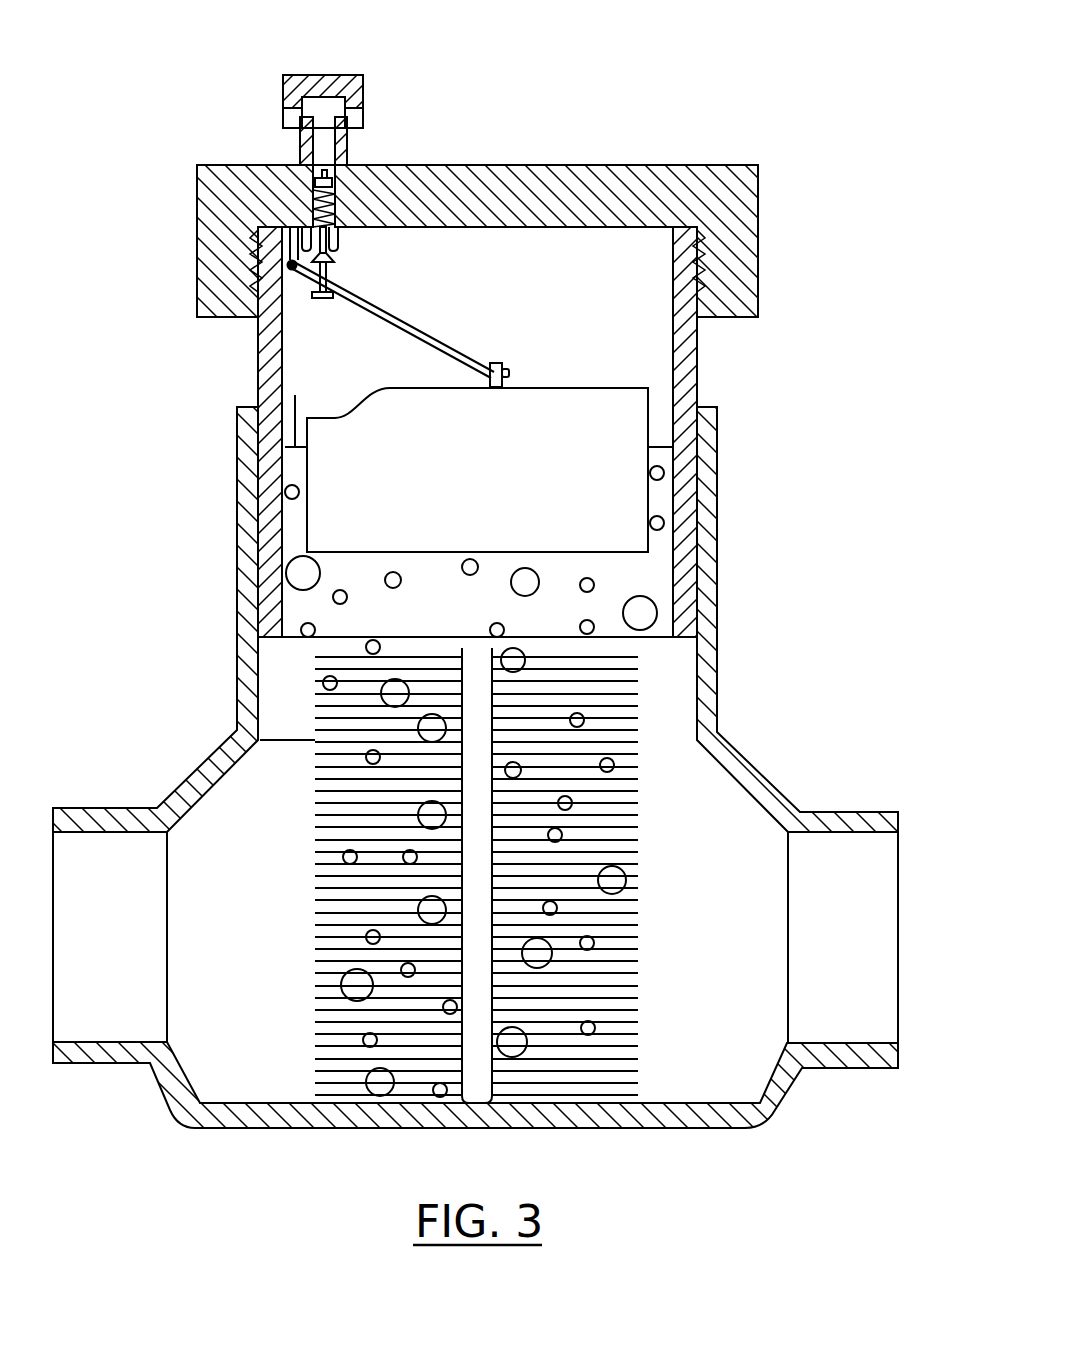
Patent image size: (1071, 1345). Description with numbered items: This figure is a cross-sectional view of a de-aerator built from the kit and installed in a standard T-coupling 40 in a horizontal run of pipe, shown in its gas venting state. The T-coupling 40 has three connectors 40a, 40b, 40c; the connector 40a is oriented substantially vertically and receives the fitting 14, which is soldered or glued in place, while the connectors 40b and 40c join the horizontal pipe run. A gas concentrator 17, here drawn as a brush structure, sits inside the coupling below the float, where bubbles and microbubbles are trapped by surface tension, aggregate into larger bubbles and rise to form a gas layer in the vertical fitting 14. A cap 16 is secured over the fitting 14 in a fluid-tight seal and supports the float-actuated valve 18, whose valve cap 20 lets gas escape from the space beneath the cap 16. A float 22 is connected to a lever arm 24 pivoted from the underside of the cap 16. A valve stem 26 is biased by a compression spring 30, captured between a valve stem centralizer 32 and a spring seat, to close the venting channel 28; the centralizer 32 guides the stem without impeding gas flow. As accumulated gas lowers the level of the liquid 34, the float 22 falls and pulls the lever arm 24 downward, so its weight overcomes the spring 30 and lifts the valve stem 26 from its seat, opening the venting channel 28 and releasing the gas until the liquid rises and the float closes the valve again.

The fitting 14 is at (708, 353).
The cap 16 is at (772, 239).
The gas concentrator 17 is at (605, 1082).
The float-actuated valve 18 is at (347, 143).
The valve cap 20 is at (333, 74).
The float 22 is at (548, 462).
The lever arm 24 is at (402, 318).
The valve stem 26 is at (330, 269).
The venting channel 28 is at (322, 142).
The compression spring 30 is at (313, 196).
The valve stem centralizer 32 is at (348, 192).
The level of the liquid 34 is at (295, 400).
The T-coupling 40 is at (728, 628).
The connector 40a is at (699, 404).
The connector 40b is at (848, 822).
The connector 40c is at (108, 812).